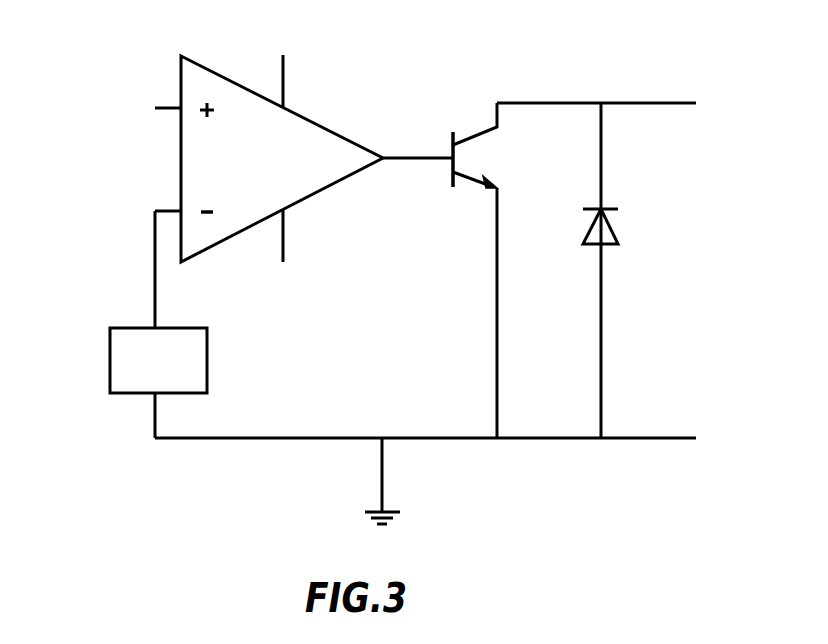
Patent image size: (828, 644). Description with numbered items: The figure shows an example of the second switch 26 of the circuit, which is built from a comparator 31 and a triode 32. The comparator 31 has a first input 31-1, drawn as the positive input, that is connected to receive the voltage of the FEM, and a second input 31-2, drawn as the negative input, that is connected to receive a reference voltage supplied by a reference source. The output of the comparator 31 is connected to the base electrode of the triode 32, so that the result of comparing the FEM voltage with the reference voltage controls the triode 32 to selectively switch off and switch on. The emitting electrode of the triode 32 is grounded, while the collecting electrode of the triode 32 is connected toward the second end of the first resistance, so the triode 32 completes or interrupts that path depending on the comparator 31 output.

The second switch 26 is at (397, 67).
The comparator 31 is at (187, 63).
The first input 31-1 is at (155, 108).
The second input 31-2 is at (155, 211).
The triode 32 is at (478, 172).